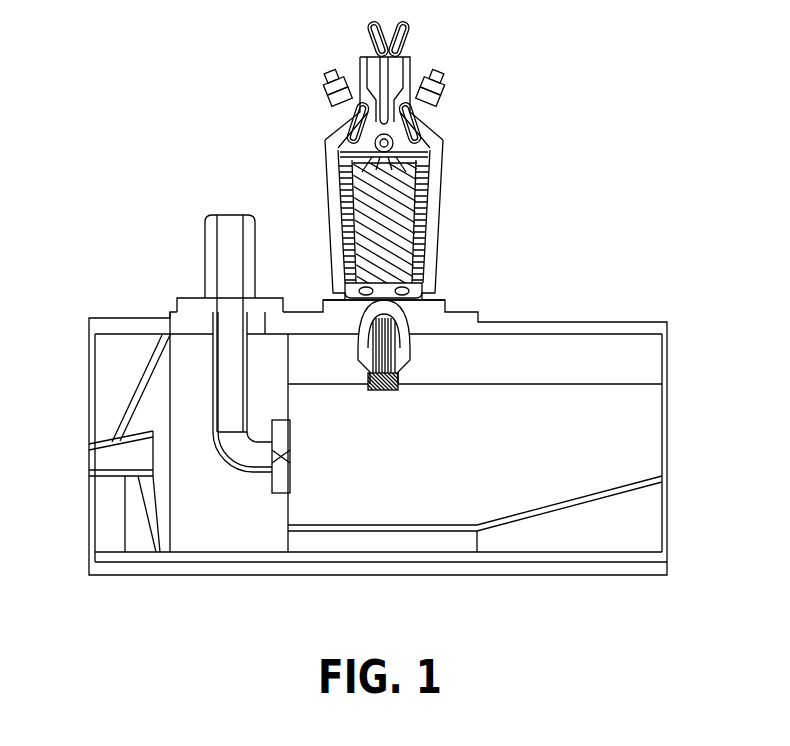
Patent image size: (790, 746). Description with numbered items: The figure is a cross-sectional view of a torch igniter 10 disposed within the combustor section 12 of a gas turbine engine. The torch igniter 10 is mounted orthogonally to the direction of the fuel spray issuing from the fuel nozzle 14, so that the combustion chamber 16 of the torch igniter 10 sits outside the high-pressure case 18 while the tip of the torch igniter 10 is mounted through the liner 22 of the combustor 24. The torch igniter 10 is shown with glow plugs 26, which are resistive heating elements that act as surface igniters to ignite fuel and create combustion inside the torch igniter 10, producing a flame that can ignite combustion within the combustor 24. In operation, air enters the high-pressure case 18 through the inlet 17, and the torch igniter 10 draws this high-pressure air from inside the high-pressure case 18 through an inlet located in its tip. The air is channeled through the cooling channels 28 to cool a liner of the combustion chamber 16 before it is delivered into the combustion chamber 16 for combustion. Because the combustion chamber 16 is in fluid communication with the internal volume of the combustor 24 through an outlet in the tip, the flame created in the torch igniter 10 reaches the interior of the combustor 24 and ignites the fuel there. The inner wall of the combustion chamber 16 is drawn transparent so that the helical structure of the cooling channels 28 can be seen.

The torch igniter 10 is at (385, 205).
The combustor section 12 is at (133, 156).
The fuel nozzle 14 is at (271, 434).
The combustion chamber 16 is at (347, 208).
The inlet 17 is at (99, 458).
The high-pressure case 18 is at (463, 310).
The liner 22 is at (604, 382).
The combustor 24 is at (453, 463).
The glow plugs 26 is at (398, 198).
The cooling channels 28 is at (337, 234).